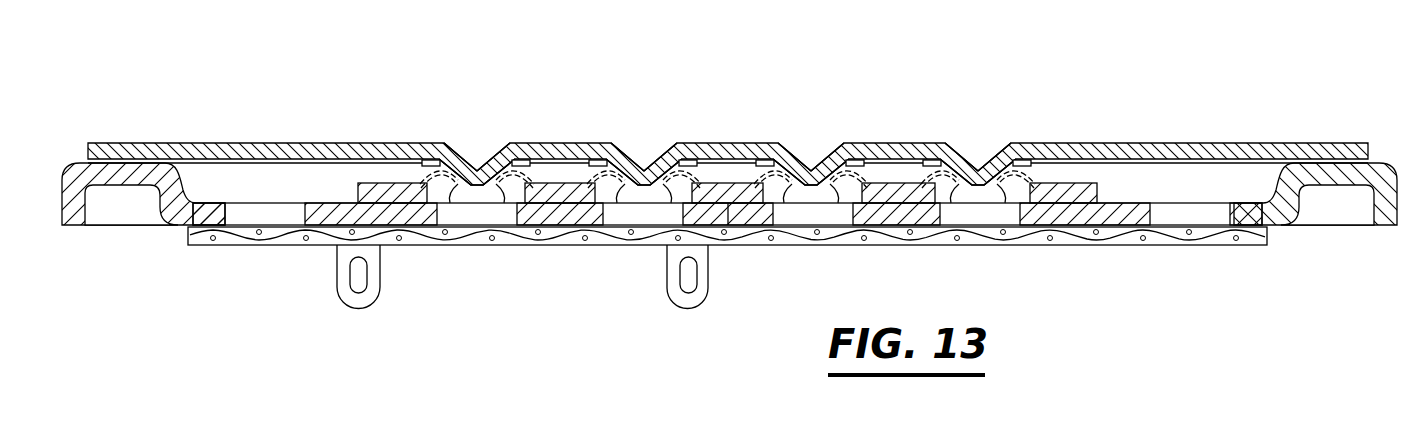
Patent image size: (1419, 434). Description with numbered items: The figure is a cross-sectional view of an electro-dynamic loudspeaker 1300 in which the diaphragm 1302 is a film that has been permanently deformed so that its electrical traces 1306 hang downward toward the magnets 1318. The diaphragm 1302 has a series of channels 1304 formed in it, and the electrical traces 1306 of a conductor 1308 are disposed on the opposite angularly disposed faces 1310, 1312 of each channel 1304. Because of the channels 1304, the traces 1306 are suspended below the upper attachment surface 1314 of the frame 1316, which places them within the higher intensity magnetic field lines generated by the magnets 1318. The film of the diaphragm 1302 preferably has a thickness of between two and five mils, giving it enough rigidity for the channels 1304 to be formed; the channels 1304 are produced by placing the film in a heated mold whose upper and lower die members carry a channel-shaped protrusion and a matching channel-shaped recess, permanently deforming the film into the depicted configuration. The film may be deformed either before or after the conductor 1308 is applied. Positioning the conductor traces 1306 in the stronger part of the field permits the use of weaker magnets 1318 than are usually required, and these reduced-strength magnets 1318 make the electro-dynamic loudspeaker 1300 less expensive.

The electro-dynamic loudspeaker 1300 is at (1103, 98).
The diaphragm 1302 is at (1138, 143).
The channels 1304 is at (477, 150).
The electrical traces 1306 is at (503, 186).
The conductor 1308 is at (440, 185).
The first angularly disposed face 1310 is at (487, 148).
The second angularly disposed face 1312 is at (465, 148).
The upper attachment surface 1314 is at (1381, 162).
The frame 1316 is at (1335, 180).
The magnets 1318 is at (402, 195).